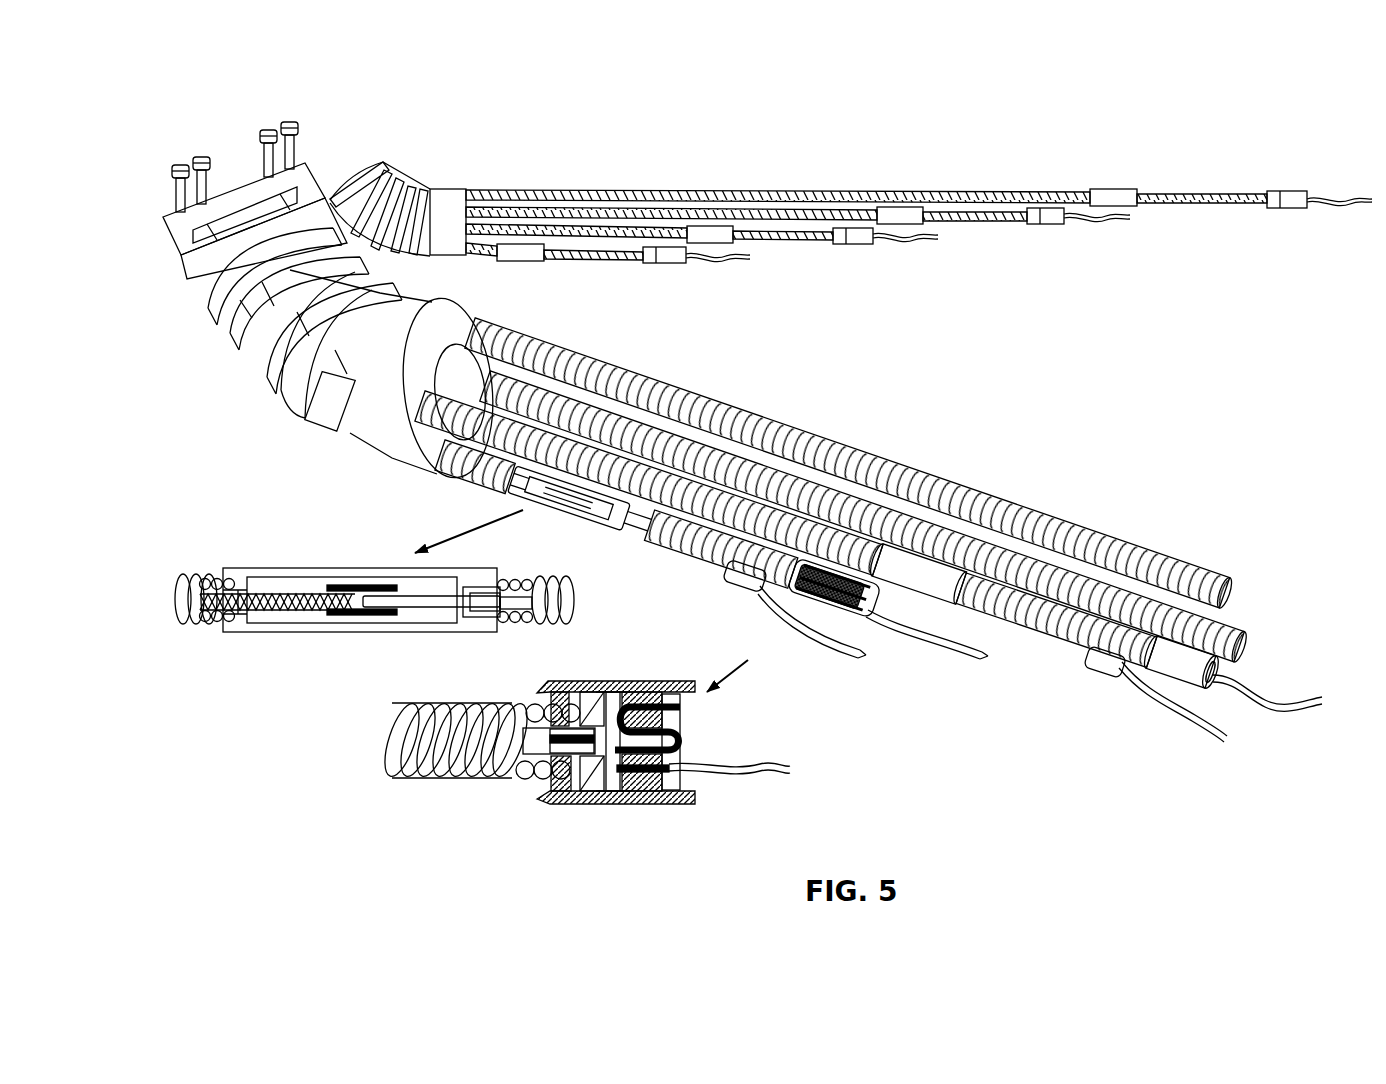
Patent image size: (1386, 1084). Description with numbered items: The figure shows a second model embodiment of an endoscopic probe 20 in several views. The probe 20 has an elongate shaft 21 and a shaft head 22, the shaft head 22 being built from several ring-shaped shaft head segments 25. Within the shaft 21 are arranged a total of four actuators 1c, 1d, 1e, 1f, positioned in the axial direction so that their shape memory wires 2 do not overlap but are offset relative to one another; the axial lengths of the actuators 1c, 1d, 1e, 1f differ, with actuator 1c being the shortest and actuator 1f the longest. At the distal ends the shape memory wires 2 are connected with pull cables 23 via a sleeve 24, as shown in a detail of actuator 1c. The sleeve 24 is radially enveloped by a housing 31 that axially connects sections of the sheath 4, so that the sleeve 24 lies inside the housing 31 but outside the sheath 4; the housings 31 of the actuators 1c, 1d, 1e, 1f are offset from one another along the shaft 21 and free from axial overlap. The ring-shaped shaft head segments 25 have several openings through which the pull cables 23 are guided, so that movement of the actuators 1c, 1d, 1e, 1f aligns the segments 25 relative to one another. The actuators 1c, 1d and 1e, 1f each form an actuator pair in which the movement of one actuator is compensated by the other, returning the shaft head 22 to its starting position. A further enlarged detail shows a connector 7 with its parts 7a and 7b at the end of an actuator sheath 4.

The actuator 1c is at (442, 470).
The actuator 1d is at (528, 377).
The actuator 1e is at (574, 390).
The actuator 1f is at (722, 400).
The shape memory wire 2 is at (423, 603).
The sheath 4 is at (200, 622).
The connector 7 is at (584, 797).
The connector main body 7a is at (643, 793).
The connector cover 7b is at (574, 800).
The endoscopic probe 20 is at (1065, 480).
The elongate shaft 21 is at (803, 420).
The shaft head 22 is at (202, 343).
The pull cable 23 is at (293, 152).
The sleeve 24 is at (357, 617).
The ring-shaped shaft head segment 25 is at (190, 268).
The housing 31 is at (330, 572).